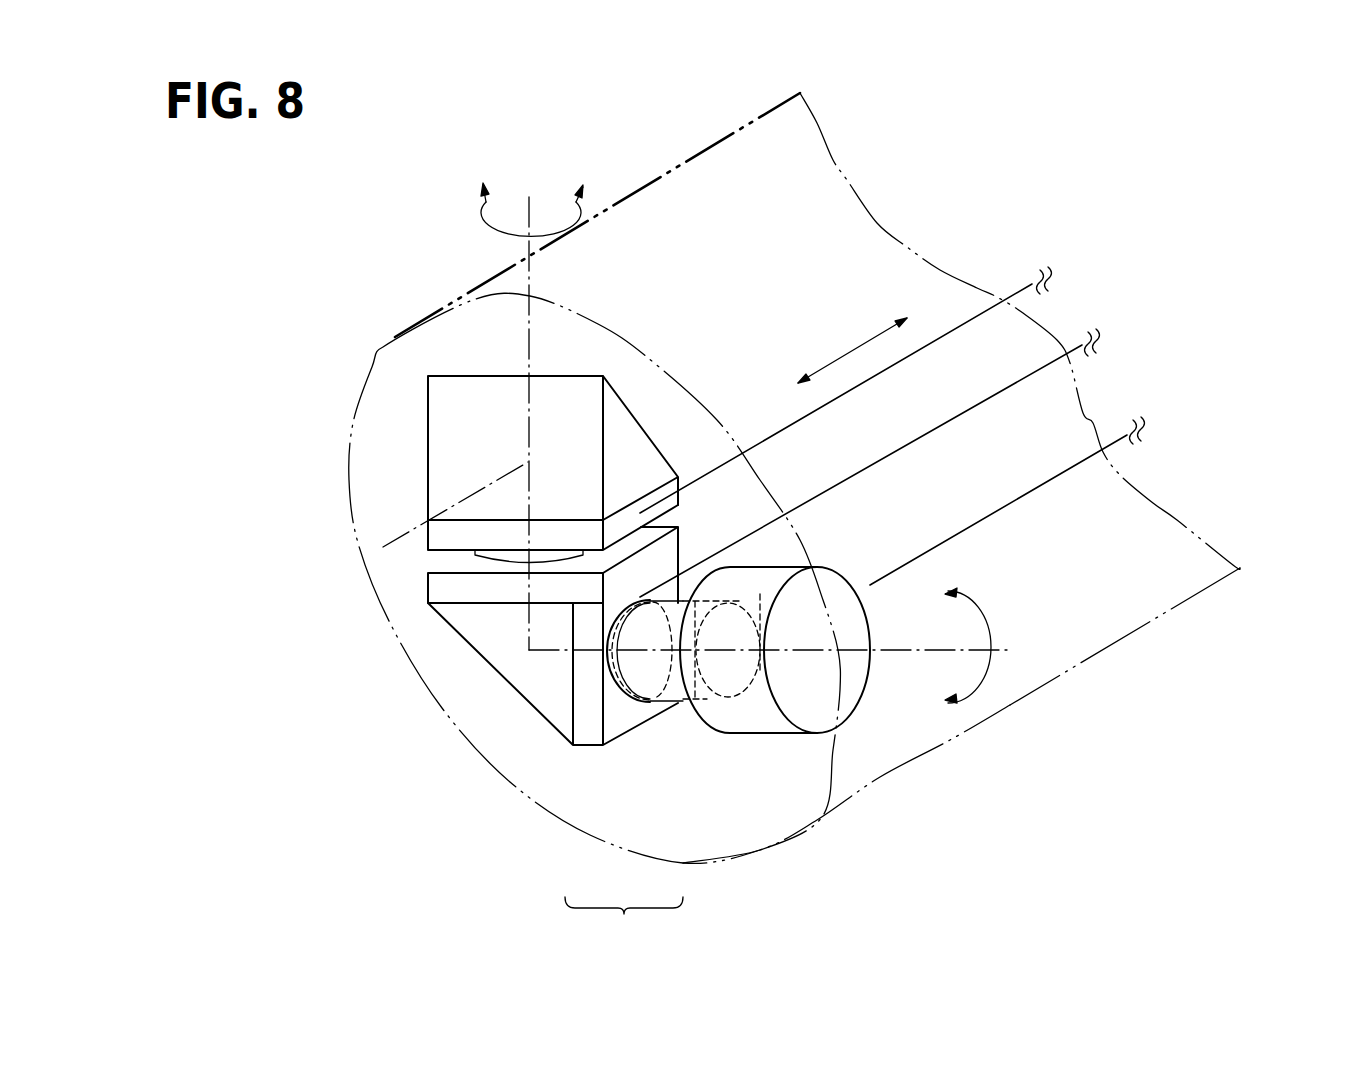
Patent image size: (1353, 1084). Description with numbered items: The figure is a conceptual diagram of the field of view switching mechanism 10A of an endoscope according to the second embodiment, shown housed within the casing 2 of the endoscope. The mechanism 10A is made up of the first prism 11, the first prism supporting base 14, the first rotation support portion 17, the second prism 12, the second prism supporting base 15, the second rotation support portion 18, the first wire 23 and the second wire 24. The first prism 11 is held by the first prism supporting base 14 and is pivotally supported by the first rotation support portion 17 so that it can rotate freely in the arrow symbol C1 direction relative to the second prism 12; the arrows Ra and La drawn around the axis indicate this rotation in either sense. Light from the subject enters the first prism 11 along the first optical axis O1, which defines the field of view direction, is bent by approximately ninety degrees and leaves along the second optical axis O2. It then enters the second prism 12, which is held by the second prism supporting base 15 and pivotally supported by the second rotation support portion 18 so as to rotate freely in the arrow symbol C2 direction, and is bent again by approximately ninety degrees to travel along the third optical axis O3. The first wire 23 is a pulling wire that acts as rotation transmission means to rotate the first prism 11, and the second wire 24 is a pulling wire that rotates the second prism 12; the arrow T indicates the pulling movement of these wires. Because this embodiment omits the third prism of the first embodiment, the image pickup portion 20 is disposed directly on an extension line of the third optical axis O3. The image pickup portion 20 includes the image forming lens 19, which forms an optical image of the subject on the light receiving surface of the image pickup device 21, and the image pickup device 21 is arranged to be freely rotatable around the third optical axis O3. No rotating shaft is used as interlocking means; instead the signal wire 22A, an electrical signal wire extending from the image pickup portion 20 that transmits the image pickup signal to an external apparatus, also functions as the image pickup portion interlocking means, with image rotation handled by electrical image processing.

The insertion portion 2 is at (680, 147).
The field of view switching mechanism 10A is at (693, 262).
The first prism 11 is at (450, 403).
The second prism 12 is at (473, 632).
The first prism supporting base 14 is at (466, 552).
The second prism supporting base 15 is at (436, 602).
The first rotation support portion 17 is at (466, 553).
The second rotation support portion 18 is at (680, 700).
The image forming lens 19 is at (706, 733).
The image pickup portion 20 is at (624, 920).
The image pickup device 21 is at (665, 715).
The signal wire 22A is at (1027, 490).
The first wire 23 is at (843, 396).
The second wire 24 is at (977, 408).
The first prism rotation direction C1 is at (480, 224).
The second prism rotation direction C2 is at (1000, 696).
The first optical axis O1 is at (410, 537).
The second optical axis O2 is at (530, 639).
The third optical axis O3 is at (557, 653).
The right rotation direction Ra is at (500, 172).
The left rotation direction La is at (564, 173).
The translation direction T is at (870, 340).